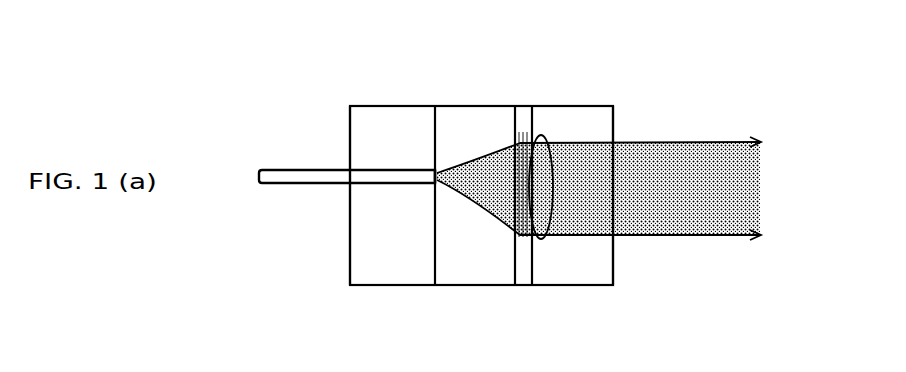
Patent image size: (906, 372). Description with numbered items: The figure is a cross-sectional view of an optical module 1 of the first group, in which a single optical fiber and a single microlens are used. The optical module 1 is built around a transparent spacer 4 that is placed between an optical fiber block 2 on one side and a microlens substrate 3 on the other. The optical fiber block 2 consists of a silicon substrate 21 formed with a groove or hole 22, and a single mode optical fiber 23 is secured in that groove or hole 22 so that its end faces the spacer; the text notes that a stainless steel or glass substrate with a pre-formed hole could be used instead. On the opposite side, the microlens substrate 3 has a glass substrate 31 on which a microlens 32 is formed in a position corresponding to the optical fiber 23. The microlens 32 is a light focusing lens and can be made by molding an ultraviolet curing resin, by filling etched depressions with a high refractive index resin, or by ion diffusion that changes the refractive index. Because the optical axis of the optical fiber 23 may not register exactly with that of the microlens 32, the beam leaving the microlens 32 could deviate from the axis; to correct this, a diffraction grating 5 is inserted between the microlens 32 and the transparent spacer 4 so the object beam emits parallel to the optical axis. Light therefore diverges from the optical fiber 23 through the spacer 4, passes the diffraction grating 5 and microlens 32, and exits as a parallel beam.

The optical module 1 is at (456, 80).
The optical fiber block 2 is at (338, 104).
The silicon substrate 21 is at (362, 227).
The groove or hole 22 is at (435, 177).
The single mode optical fiber 23 is at (280, 172).
The microlens substrate 3 is at (618, 99).
The glass substrate 31 is at (562, 123).
The microlens 32 is at (543, 237).
The transparent spacer 4 is at (470, 273).
The diffraction grating 5 is at (527, 240).